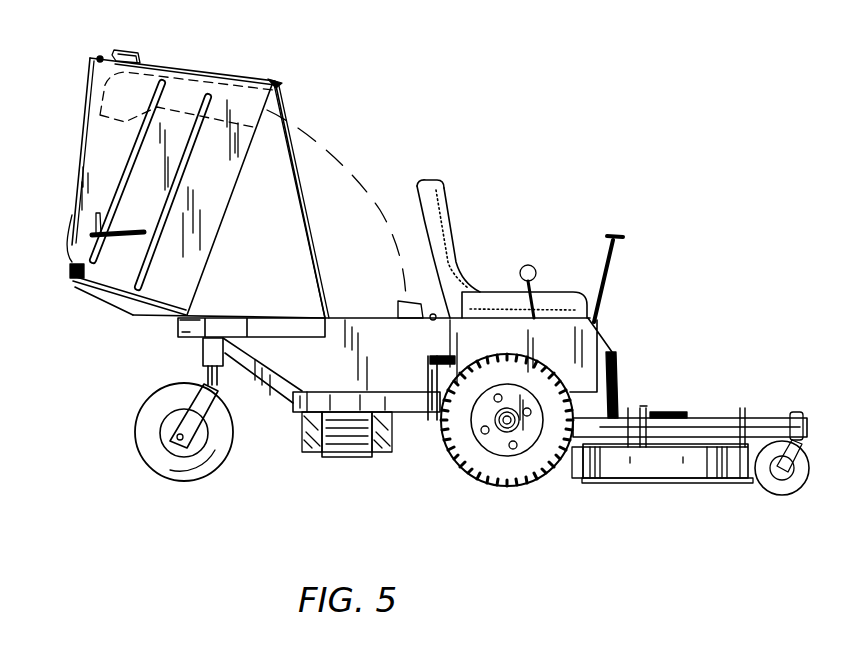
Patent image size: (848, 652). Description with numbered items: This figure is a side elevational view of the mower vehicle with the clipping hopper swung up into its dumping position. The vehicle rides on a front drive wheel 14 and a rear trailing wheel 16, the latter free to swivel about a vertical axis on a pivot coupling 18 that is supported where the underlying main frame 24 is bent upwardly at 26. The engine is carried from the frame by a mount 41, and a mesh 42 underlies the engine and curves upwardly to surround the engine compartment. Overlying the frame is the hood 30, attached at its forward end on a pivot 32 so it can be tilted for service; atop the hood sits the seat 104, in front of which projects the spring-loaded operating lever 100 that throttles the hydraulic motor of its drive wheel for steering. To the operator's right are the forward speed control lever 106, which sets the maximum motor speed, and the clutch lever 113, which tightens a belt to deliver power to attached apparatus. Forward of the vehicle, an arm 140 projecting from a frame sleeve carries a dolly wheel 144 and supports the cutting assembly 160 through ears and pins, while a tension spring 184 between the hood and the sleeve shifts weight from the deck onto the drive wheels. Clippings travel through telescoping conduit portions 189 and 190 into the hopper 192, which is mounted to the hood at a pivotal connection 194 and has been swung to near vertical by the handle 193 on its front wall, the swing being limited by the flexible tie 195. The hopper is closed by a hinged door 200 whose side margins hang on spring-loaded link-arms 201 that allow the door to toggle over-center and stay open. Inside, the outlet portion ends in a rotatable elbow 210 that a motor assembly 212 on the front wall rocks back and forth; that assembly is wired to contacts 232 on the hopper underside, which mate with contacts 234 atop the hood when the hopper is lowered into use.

The drive wheel 14 is at (493, 482).
The trailing wheel 16 is at (138, 425).
The pivot coupling 18 is at (202, 356).
The main frame 24 is at (407, 410).
The upwardly bent portion of the main frame 26 is at (272, 388).
The hood 30 is at (341, 362).
The pivot 32 is at (575, 375).
The mount 41 is at (352, 458).
The mesh 42 is at (384, 452).
The operating lever 100 is at (622, 248).
The seat 104 is at (452, 228).
The forward speed control lever 106 is at (536, 262).
The clutch lever 113 is at (428, 359).
The arm 140 is at (770, 388).
The dolly wheel 144 is at (780, 497).
The cutting assembly 160 is at (650, 483).
The tension spring 184 is at (618, 387).
The telescoping conduit portion 189 is at (398, 304).
The telescoping outlet portion 190 is at (207, 72).
The hopper 192 is at (86, 136).
The handle 193 is at (99, 58).
The pivotal connection 194 is at (178, 327).
The flexible tie 195 is at (297, 172).
The hinged door 200 is at (127, 305).
The spring-loaded link-arm 201 is at (77, 262).
The elbow 210 is at (147, 58).
The motor assembly 212 is at (137, 53).
The contacts 232 is at (280, 90).
The mating contacts 234 is at (437, 320).